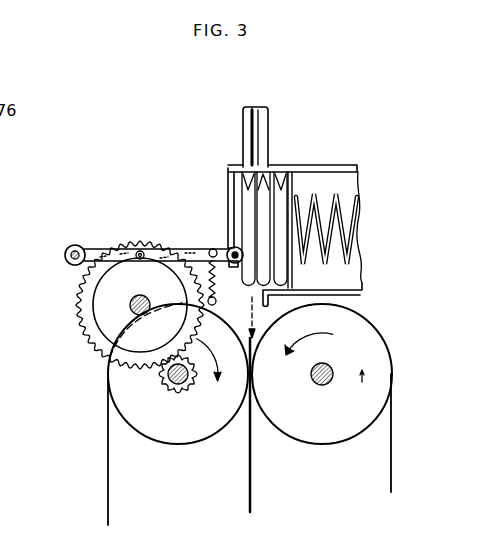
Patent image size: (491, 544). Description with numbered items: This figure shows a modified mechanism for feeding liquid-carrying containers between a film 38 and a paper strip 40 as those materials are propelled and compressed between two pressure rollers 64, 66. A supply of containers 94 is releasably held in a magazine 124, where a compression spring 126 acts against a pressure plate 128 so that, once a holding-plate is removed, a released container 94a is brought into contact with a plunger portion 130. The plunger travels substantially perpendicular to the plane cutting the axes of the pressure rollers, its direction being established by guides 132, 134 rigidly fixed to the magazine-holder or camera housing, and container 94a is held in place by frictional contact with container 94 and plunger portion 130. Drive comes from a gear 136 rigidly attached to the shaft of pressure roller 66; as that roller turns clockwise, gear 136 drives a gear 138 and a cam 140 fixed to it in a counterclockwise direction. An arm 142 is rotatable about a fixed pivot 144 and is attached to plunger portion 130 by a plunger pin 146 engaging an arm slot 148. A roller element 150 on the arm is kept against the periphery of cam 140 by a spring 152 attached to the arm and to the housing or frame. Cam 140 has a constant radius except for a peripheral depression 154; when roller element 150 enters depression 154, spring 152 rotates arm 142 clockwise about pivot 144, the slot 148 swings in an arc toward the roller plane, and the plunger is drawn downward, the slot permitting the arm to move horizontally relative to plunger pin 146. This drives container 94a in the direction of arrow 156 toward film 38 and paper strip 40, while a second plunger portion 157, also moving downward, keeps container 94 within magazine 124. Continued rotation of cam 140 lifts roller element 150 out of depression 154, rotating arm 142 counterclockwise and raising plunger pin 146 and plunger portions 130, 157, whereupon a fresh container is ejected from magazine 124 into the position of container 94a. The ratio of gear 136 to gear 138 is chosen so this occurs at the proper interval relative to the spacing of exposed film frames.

The film 38 is at (392, 415).
The paper strip 40 is at (107, 470).
The pressure roller 64 is at (378, 336).
The pressure roller 66 is at (167, 438).
The container 94 is at (279, 174).
The container 94a is at (241, 170).
The magazine 124 is at (364, 289).
The compression spring 126 is at (343, 200).
The pressure plate 128 is at (292, 279).
The plunger portion 130 is at (230, 168).
The guide 132 is at (243, 114).
The guide 134 is at (264, 125).
The gear 136 is at (188, 390).
The gear 138 is at (83, 321).
The cam 140 is at (97, 295).
The arm 142 is at (97, 250).
The fixed pivot 144 is at (65, 255).
The plunger pin 146 is at (233, 252).
The arm slot 148 is at (214, 249).
The roller element 150 is at (139, 249).
The spring 152 is at (212, 262).
The peripheral depression 154 is at (100, 277).
The arrow 156 is at (227, 302).
The plunger portion 157 is at (255, 107).